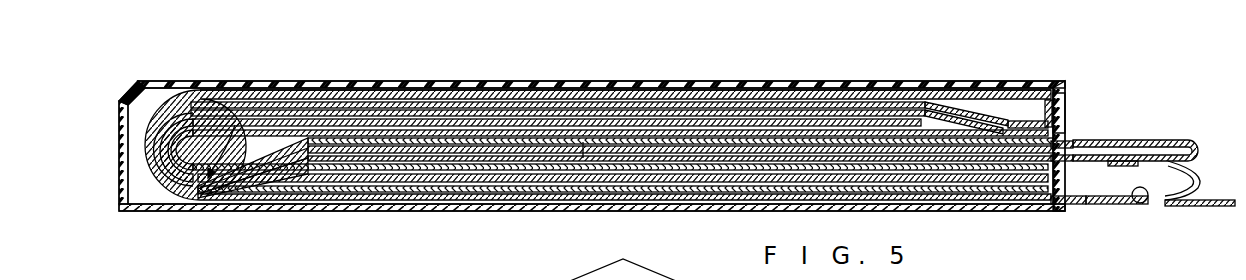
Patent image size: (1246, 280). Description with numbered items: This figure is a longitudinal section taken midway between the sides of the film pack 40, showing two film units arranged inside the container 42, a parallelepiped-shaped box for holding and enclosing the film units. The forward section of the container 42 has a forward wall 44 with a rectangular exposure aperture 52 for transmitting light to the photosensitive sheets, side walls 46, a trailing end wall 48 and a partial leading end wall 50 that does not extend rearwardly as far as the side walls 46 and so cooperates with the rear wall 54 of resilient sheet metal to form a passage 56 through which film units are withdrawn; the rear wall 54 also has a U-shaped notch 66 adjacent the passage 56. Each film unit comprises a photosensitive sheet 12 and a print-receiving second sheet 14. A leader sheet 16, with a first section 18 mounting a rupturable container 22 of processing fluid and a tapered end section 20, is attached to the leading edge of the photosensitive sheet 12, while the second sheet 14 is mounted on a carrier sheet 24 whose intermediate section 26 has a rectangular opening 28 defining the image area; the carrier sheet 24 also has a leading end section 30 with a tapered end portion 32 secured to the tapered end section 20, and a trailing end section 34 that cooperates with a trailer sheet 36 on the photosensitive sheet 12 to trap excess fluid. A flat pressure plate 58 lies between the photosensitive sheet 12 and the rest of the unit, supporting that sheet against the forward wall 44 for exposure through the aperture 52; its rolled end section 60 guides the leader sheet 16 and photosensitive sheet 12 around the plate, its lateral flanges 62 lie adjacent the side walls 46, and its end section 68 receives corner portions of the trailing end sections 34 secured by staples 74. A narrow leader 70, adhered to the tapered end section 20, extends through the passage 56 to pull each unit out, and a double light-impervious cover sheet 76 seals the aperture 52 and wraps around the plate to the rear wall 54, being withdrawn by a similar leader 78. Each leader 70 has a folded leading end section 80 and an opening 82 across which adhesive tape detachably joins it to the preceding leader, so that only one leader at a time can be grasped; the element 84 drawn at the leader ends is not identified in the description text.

The photosensitive sheet 12 is at (462, 106).
The second sheet 14 is at (480, 157).
The leader sheet 16 is at (267, 87).
The first section 18 is at (142, 133).
The tapered end section 20 is at (647, 153).
The rupturable container 22 is at (230, 177).
The carrier sheet 24 is at (382, 143).
The intermediate section 26 is at (506, 172).
The rectangular opening 28 is at (405, 147).
The leading end section 30 is at (763, 173).
The tapered end portion 32 is at (587, 148).
The trailing end section 34 is at (277, 177).
The trailer sheet 36 is at (980, 112).
The film pack 40 is at (545, 74).
The container 42 is at (1058, 73).
The forward wall 44 is at (925, 98).
The side walls 46 is at (137, 98).
The trailing end wall 48 is at (110, 160).
The leading end wall 50 is at (1057, 100).
The exposure aperture 52 is at (217, 80).
The rear wall 54 is at (430, 205).
The passage 56 is at (1047, 163).
The pressure plate 58 is at (298, 113).
The rolled end section 60 is at (165, 143).
The lateral flanges 62 is at (249, 151).
The notch 66 is at (868, 200).
The end section 68 is at (947, 105).
The leader 70 is at (1063, 137).
The staples 74 is at (1038, 95).
The cover sheet 76 is at (677, 83).
The leader 78 is at (1070, 200).
The leading end section 80 is at (1163, 133).
The opening 82 is at (1095, 160).
The terminal strip 84 is at (1130, 163).